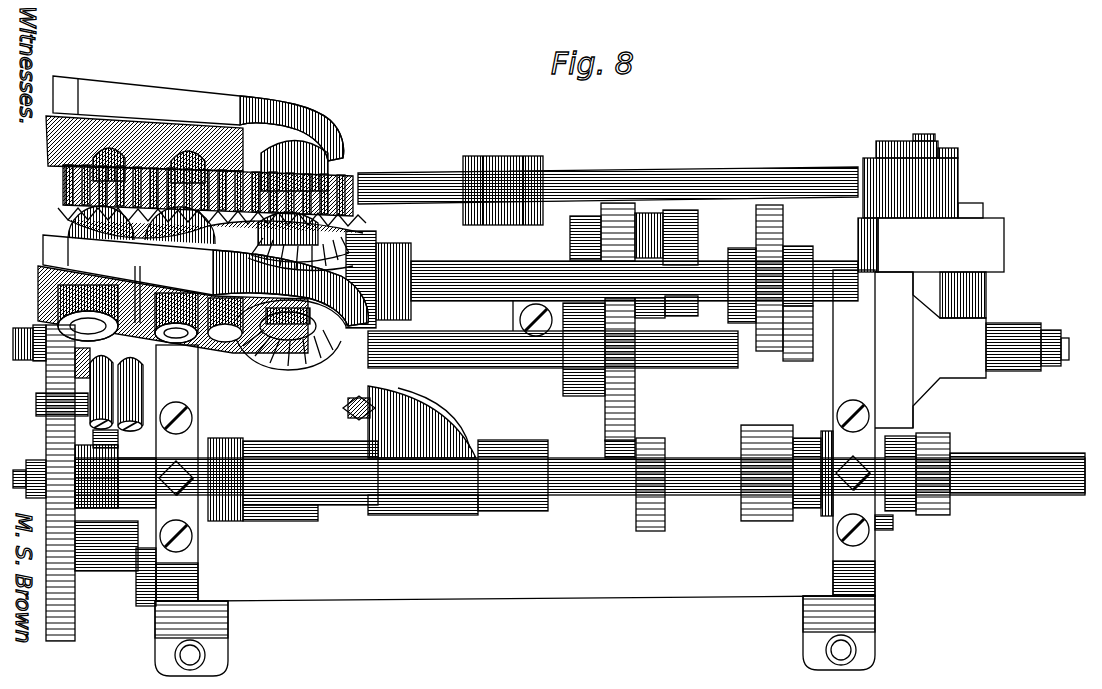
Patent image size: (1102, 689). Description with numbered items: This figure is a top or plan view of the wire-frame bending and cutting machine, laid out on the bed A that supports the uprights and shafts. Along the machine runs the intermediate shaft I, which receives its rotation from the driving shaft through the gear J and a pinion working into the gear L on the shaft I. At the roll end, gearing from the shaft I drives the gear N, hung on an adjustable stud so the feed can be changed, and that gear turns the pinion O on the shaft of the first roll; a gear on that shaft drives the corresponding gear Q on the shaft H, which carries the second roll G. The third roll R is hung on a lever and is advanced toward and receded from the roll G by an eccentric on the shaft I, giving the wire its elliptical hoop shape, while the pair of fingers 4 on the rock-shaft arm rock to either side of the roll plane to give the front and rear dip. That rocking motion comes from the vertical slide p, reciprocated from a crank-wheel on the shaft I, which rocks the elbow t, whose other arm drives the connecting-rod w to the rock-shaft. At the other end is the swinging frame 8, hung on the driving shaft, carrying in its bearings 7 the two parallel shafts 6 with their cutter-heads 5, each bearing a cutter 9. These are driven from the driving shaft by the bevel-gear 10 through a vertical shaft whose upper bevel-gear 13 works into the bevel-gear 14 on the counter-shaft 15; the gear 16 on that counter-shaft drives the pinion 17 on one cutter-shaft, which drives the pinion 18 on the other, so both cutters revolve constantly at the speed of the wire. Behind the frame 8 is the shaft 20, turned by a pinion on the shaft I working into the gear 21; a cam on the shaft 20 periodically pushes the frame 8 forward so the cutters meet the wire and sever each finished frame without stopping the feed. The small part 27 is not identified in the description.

The bed A is at (505, 473).
The connecting-rod w is at (608, 190).
The shaft 20 is at (617, 281).
The gear 16 is at (368, 269).
The gear J is at (620, 215).
The intermediate shaft I is at (553, 334).
The gear L is at (600, 332).
The gear 21 is at (770, 283).
The elbow t is at (931, 203).
The vertical slide p is at (972, 350).
The shaft H is at (580, 481).
The gear Q is at (781, 463).
The swinging frame 8 is at (257, 267).
The pinion 18 is at (202, 195).
The pinion 17 is at (215, 223).
The bearings 7 is at (149, 222).
The counter-shaft 15 is at (300, 206).
The bevel-gear 14 is at (291, 251).
The bevel-gear 13 is at (222, 340).
The cutter 9 is at (88, 273).
The cutter-heads 5 is at (88, 326).
The bevel-gear 10 is at (180, 275).
The shafts 6 is at (176, 333).
The fingers 4 is at (159, 373).
The third roll R is at (28, 397).
The pinion O is at (44, 483).
The second roll G is at (96, 476).
The gear N is at (106, 557).
The nut 27 is at (359, 413).